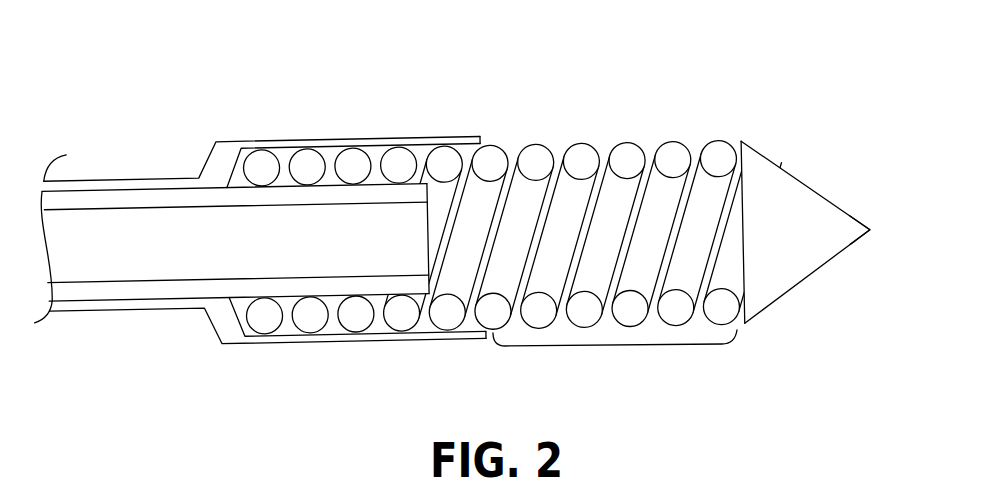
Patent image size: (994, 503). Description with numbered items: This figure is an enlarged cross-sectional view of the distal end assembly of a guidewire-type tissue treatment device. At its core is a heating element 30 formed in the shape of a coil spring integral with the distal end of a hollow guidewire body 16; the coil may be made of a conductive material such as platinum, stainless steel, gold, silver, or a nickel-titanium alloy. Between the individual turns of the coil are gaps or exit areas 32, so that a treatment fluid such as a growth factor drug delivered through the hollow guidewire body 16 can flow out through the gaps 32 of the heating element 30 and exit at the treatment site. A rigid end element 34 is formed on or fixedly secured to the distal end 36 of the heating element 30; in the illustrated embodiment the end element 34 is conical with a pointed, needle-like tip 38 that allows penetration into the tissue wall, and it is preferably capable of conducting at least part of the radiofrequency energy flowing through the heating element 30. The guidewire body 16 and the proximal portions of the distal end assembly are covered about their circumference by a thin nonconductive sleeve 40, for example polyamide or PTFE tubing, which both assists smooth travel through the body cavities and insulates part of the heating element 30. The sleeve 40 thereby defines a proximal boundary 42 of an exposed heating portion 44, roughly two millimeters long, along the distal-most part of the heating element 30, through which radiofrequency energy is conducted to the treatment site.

The hollow guidewire body 16 is at (107, 290).
The heating element 30 is at (555, 108).
The gaps or exit areas 32 is at (698, 150).
The rigid end element 34 is at (787, 243).
The distal end of heating element 36 is at (745, 147).
The pointed or needle-like tip 38 is at (857, 230).
The nonconductive sleeve 40 is at (217, 163).
The proximal boundary 42 is at (485, 339).
The heating portion 44 is at (615, 346).